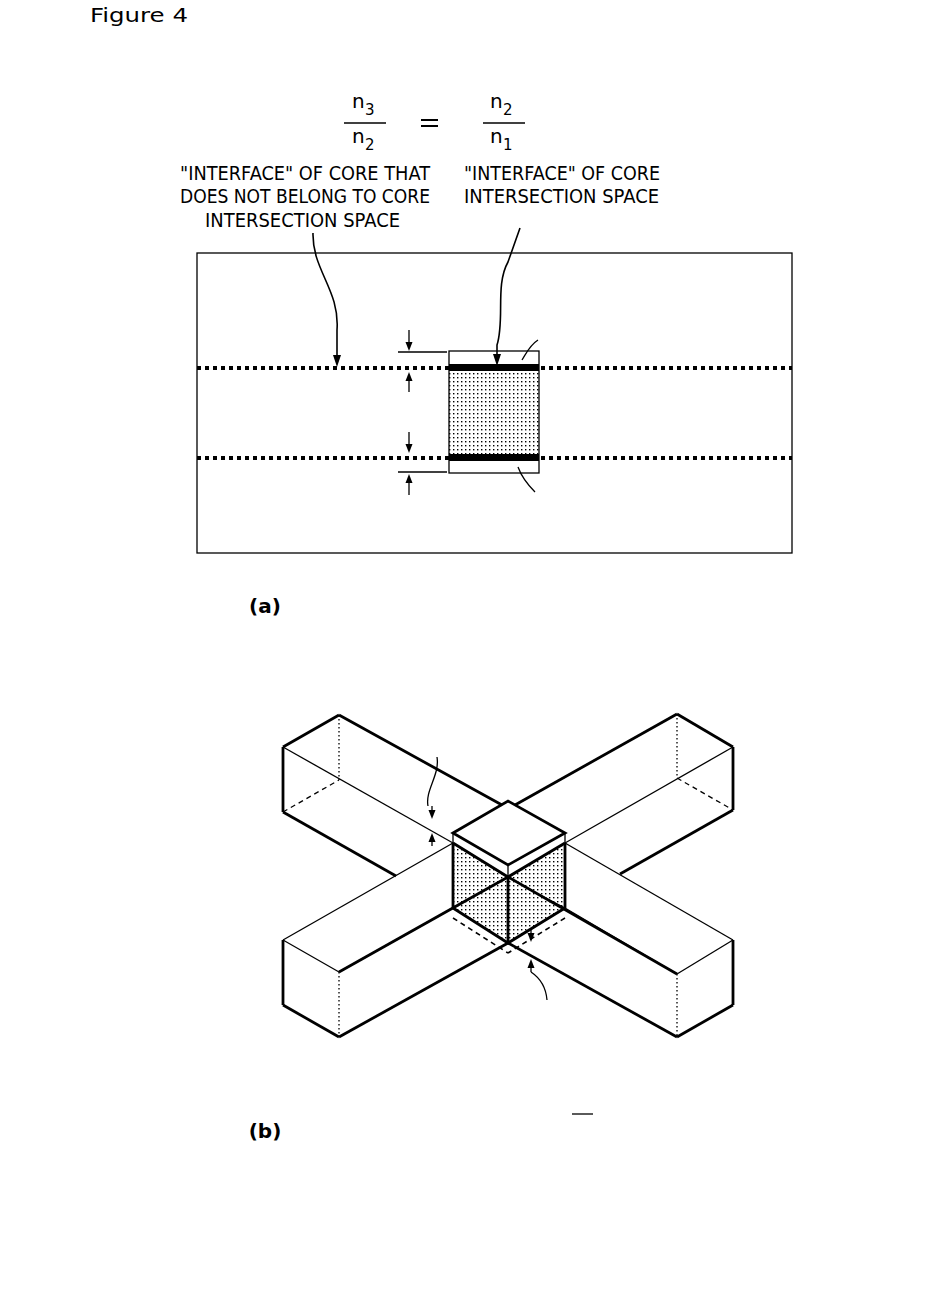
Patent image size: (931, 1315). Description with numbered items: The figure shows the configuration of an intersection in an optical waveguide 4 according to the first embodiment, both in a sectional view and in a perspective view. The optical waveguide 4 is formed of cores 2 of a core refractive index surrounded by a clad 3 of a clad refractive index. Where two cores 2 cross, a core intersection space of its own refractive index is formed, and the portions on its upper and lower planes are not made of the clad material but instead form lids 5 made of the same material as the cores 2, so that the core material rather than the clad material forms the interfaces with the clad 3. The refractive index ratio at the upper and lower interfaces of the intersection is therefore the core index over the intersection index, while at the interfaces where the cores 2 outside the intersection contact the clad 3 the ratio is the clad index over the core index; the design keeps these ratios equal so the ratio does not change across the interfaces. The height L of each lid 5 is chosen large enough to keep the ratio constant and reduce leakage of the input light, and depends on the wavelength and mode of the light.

The cores 2 is at (328, 930).
The clad 3 is at (681, 1147).
The optical waveguide 4 is at (186, 401).
The lid 5 is at (497, 985).